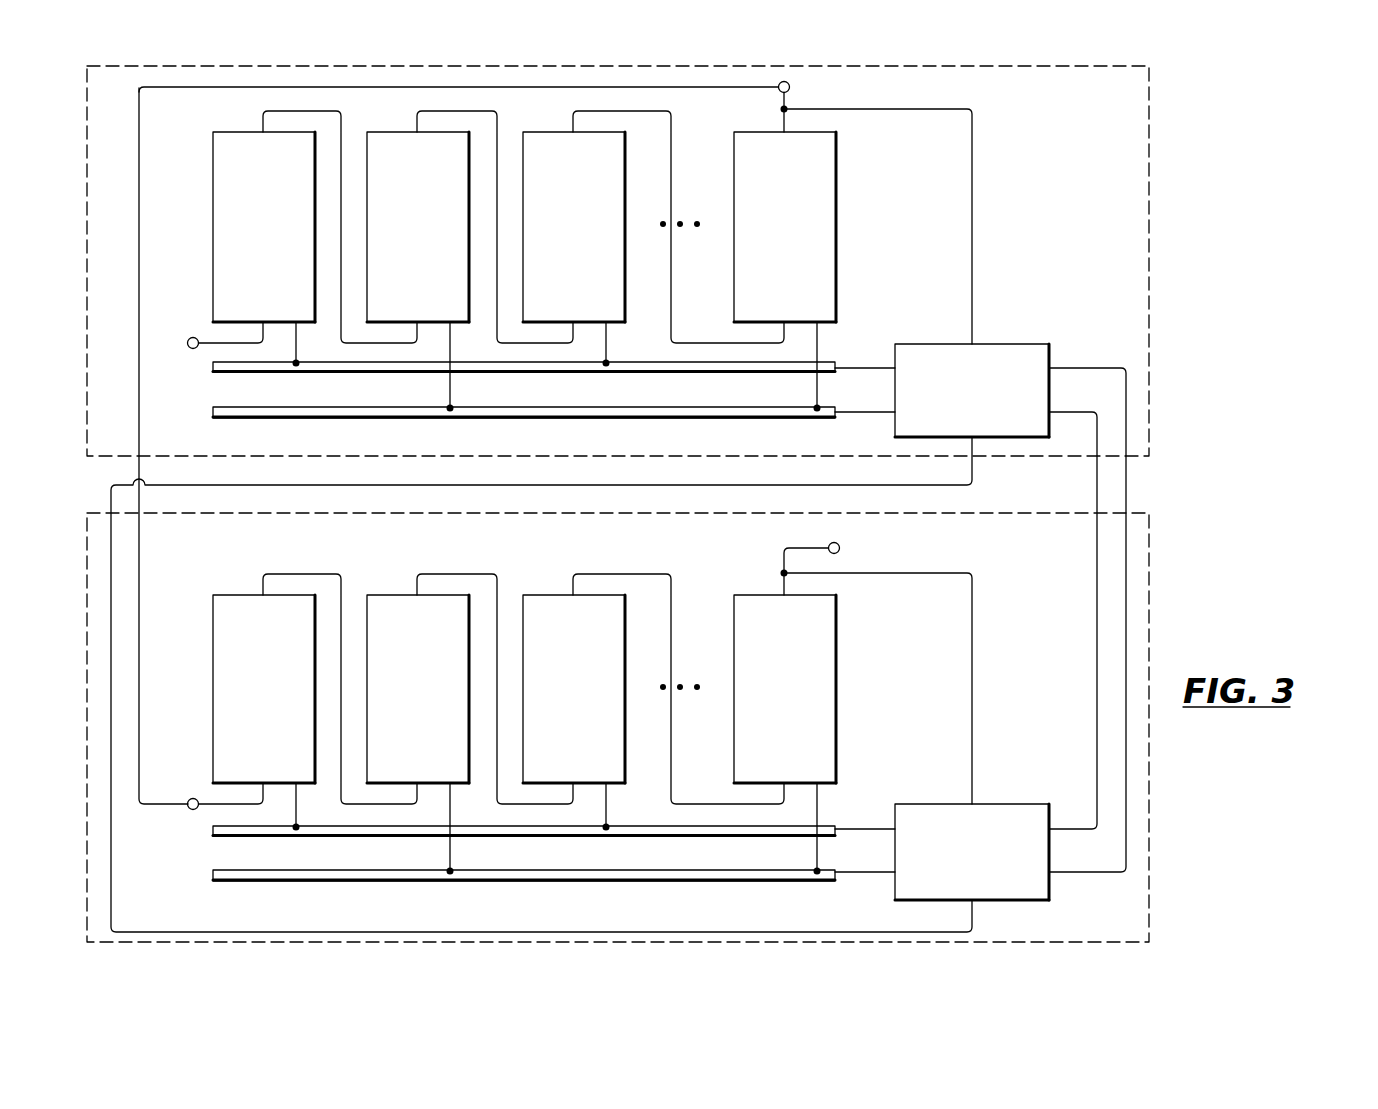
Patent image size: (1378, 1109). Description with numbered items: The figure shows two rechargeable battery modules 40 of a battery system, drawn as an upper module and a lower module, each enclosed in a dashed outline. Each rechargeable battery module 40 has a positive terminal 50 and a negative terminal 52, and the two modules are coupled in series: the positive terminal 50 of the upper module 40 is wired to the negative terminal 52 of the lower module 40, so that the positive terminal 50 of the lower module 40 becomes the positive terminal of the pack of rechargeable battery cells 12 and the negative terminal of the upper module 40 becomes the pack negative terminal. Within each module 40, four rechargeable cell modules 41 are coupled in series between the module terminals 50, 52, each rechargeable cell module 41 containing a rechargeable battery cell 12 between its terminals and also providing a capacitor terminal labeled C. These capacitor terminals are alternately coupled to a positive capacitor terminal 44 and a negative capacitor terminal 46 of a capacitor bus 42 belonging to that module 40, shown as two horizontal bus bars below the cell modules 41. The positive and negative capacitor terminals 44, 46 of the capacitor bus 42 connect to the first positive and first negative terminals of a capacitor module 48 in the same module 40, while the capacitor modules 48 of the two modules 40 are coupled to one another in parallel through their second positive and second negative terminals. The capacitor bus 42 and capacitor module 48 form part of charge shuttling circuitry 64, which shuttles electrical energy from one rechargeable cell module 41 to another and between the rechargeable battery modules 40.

The rechargeable battery cell 12 is at (1283, 150).
The rechargeable battery module 40 is at (87, 272).
The rechargeable cell module 41 is at (213, 228).
The capacitor bus 42 is at (184, 393).
The positive capacitor terminal 44 is at (319, 373).
The negative capacitor terminal 46 is at (305, 412).
The capacitor module 48 is at (1002, 344).
The positive terminal 50 is at (790, 84).
The negative terminal 52 is at (193, 337).
The charge shuttling circuitry 64 is at (1166, 411).